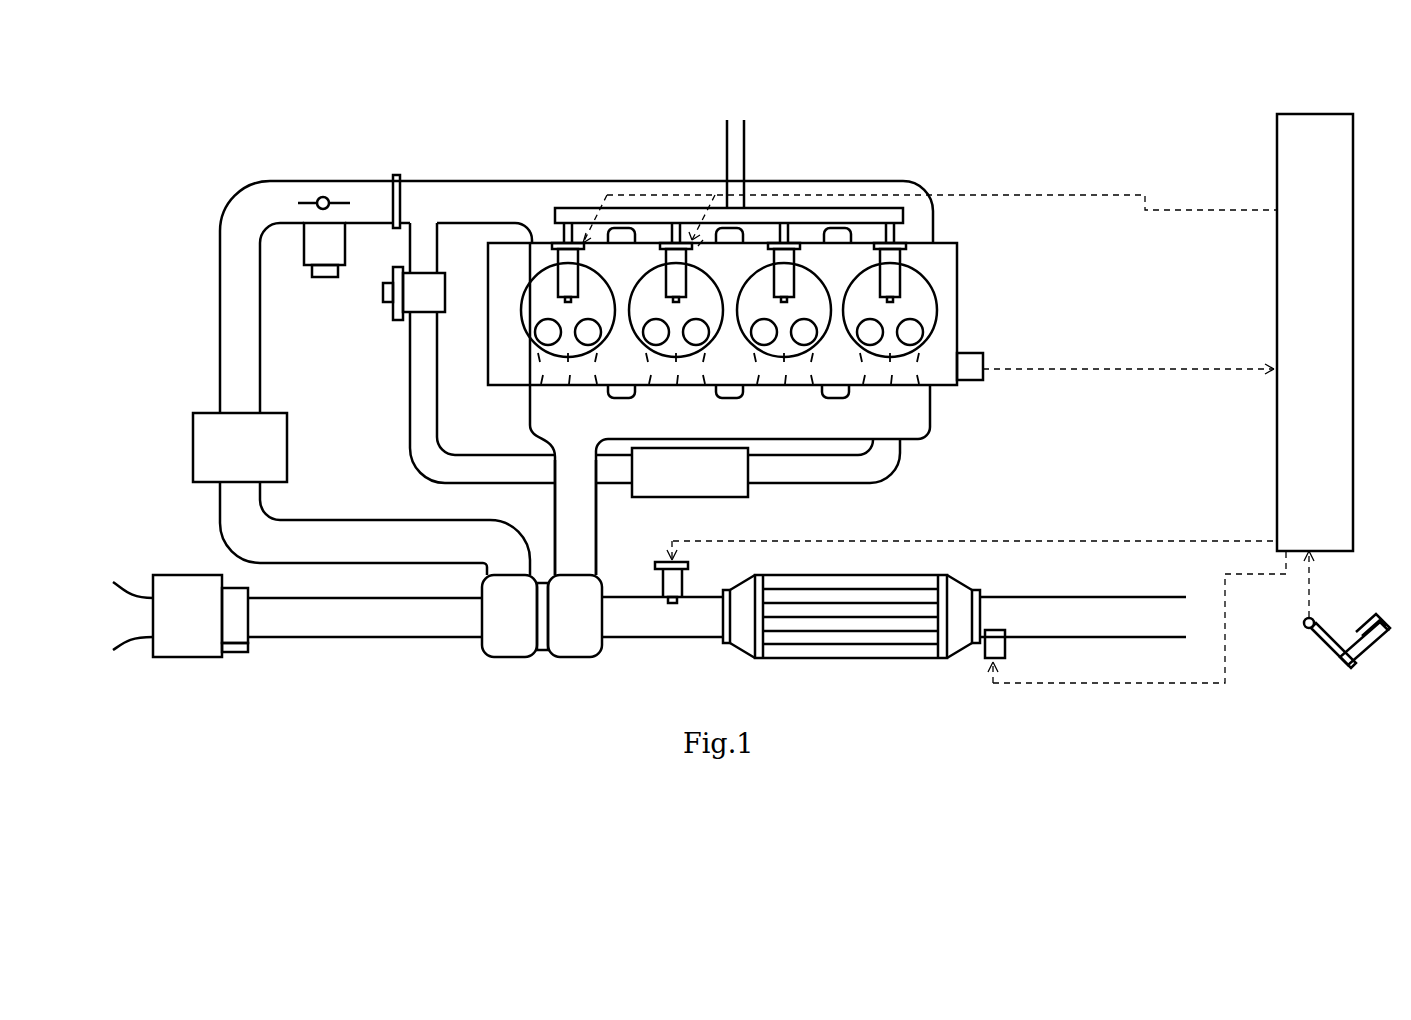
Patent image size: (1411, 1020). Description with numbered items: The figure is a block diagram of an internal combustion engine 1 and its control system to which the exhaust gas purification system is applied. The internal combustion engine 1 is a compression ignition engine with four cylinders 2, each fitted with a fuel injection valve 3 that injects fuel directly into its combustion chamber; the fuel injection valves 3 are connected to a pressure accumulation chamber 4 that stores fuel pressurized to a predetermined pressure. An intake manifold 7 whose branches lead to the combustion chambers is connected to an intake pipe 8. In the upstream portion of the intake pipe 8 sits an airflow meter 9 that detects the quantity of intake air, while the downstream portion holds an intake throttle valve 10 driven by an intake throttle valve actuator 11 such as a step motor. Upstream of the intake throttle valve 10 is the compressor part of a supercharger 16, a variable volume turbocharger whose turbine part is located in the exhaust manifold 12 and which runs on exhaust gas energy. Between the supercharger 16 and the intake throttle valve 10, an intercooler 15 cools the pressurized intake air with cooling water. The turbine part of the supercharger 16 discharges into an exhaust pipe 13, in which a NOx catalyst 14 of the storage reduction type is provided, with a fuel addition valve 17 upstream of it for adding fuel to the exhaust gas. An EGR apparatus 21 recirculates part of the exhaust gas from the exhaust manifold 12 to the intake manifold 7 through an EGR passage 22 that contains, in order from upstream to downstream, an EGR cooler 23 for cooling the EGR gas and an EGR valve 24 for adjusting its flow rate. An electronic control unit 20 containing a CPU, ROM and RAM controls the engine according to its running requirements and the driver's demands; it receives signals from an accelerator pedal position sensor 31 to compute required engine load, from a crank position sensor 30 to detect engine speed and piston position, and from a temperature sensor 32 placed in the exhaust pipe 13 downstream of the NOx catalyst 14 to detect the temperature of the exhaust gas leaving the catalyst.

The internal combustion engine 1 is at (950, 388).
The cylinders 2 is at (934, 283).
The fuel injection valves 3 is at (897, 258).
The pressure accumulation chamber 4 is at (880, 210).
The intake manifold 7 is at (444, 181).
The intake pipe 8 is at (262, 375).
The airflow meter 9 is at (228, 654).
The intake throttle valve 10 is at (333, 200).
The intake throttle valve actuator 11 is at (313, 278).
The exhaust manifold 12 is at (556, 513).
The exhaust pipe 13 is at (634, 638).
The NOx catalyst 14 is at (851, 659).
The intercooler 15 is at (287, 450).
The supercharger 16 is at (543, 657).
The fuel addition valve 17 is at (690, 565).
The electronic control unit 20 is at (1277, 467).
The EGR apparatus 21 is at (908, 469).
The EGR passage 22 is at (760, 486).
The EGR cooler 23 is at (640, 498).
The EGR valve 24 is at (383, 296).
The crank position sensor 30 is at (985, 372).
The accelerator pedal position sensor 31 is at (1305, 628).
The temperature sensor 32 is at (1005, 645).